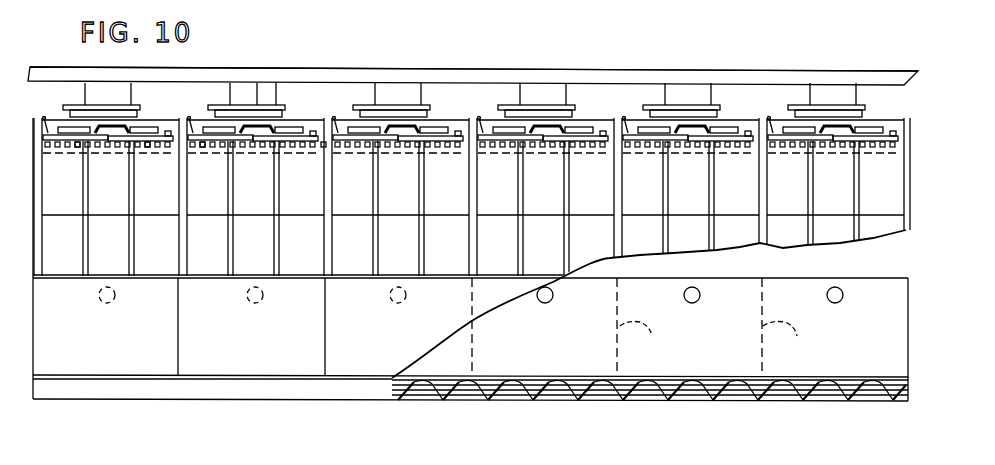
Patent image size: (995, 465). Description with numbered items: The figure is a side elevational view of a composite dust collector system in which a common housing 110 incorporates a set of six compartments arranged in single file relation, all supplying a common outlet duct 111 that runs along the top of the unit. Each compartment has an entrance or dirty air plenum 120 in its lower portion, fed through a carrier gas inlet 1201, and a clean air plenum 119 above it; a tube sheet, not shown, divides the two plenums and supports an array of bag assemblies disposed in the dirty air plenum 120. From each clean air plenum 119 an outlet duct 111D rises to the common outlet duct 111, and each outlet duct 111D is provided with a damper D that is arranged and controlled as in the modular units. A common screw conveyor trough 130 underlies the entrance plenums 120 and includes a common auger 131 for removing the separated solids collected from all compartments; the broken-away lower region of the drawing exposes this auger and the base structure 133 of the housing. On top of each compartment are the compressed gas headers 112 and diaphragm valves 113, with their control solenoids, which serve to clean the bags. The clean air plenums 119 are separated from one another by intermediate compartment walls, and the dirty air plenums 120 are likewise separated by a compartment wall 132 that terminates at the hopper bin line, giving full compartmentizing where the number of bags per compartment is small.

The common housing 110 is at (942, 236).
The common outlet duct 111 is at (474, 49).
The outlet duct 111D is at (258, 92).
The damper D is at (352, 107).
The clean air plenum 119 is at (483, 89).
The entrance or dirty air plenum 120 is at (873, 270).
The carrier gas inlet 1201 is at (258, 303).
The compartment wall 132 is at (690, 323).
The common screw conveyor trough 130 is at (445, 396).
The common auger 131 is at (538, 392).
The base trough 133 is at (881, 361).
The compressed gas header 112 is at (103, 148).
The diaphragm valve 113 is at (161, 148).